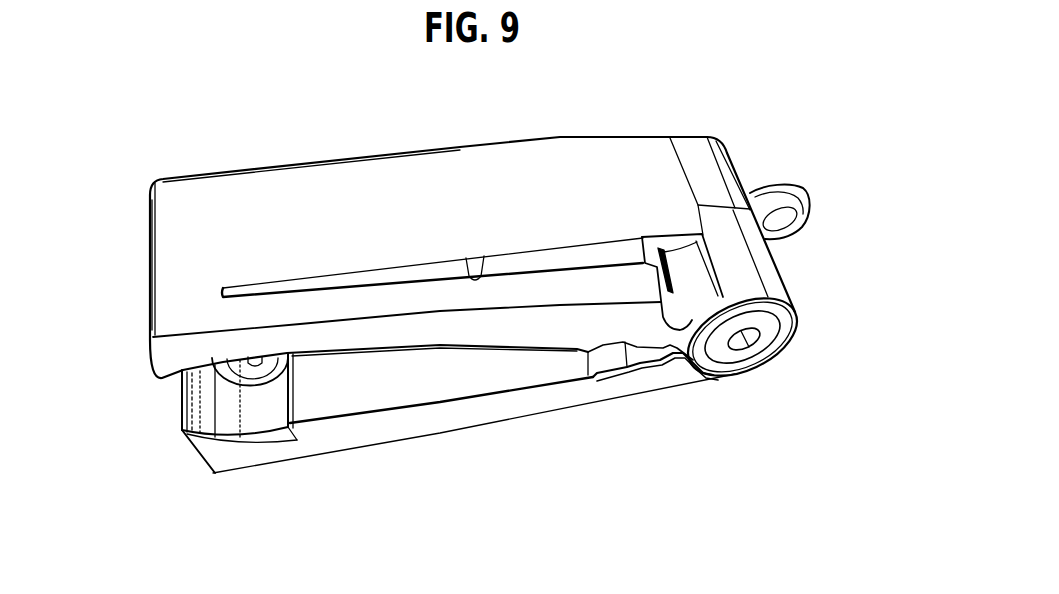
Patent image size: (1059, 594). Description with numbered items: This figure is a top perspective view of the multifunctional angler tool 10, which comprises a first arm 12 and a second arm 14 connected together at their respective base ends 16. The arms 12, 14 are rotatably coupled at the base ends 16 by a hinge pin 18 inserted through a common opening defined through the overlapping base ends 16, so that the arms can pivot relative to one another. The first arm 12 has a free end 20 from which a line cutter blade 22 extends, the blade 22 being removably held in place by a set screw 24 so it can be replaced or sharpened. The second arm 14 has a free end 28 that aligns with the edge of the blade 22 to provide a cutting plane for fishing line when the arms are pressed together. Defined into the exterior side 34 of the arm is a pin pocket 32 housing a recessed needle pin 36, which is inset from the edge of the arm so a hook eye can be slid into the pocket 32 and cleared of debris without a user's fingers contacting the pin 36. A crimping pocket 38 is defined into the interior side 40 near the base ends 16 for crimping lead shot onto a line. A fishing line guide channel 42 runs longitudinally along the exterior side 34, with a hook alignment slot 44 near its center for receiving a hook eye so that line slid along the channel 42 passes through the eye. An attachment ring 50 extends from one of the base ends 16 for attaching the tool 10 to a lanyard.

The tool 10 is at (663, 73).
The first arm 12 is at (421, 440).
The second arm 14 is at (341, 150).
The base end 16 is at (690, 152).
The hinge pin 18 is at (770, 337).
The free end 20 is at (207, 477).
The line cutter blade 22 is at (210, 408).
The set screw 24 is at (255, 373).
The free end 28 is at (182, 247).
The pin pocket 32 is at (670, 227).
The exterior side 34 is at (387, 227).
The needle pin 36 is at (705, 247).
The crimping pocket 38 is at (613, 378).
The interior side 40 is at (376, 388).
The fishing line guide channel 42 is at (319, 269).
The hook alignment slot 44 is at (473, 249).
The attachment ring 50 is at (798, 184).